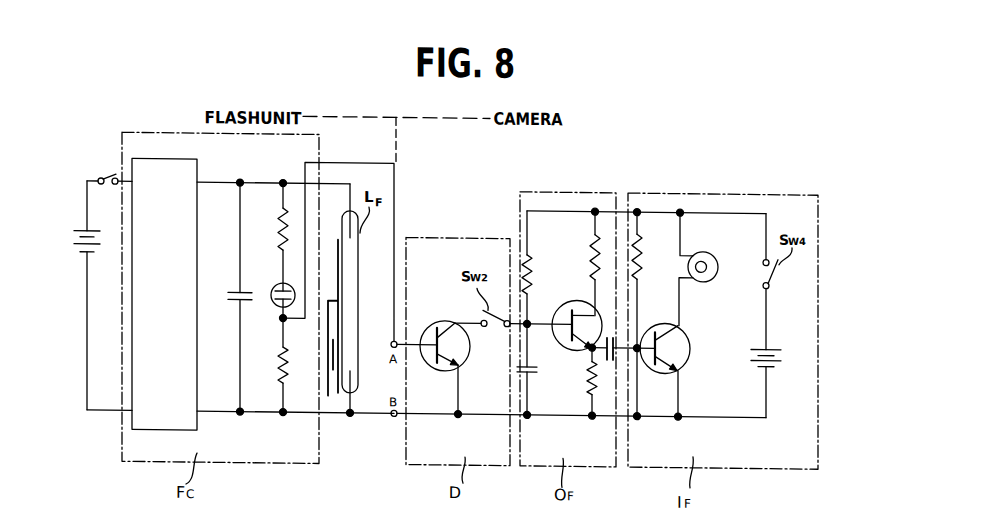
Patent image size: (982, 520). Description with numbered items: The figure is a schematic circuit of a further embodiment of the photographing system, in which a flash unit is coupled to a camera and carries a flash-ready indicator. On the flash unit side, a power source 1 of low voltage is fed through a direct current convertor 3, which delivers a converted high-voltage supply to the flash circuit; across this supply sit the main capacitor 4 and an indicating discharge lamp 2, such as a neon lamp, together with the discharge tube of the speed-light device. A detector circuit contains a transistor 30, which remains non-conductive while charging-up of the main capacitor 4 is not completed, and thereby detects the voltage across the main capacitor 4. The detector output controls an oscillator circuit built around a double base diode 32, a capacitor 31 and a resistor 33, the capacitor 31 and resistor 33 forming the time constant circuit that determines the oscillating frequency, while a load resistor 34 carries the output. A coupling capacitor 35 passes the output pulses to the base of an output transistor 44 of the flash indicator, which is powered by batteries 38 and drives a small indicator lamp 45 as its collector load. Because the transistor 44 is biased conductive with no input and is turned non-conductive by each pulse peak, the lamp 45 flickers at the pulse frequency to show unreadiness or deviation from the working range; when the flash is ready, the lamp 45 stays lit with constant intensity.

The power source of low voltage 1 is at (83, 229).
The indicating discharge lamp 2 is at (271, 296).
The direct current convertor 3 is at (156, 165).
The main capacitor 4 is at (243, 290).
The transistor 30 is at (438, 316).
The capacitor 31 is at (527, 375).
The double base diode 32 is at (567, 296).
The resistor 33 is at (527, 282).
The load resistor 34 is at (588, 374).
The coupling capacitor 35 is at (605, 358).
The batteries 38 is at (773, 360).
The output transistor 44 is at (688, 349).
The indicator lamp 45 is at (717, 256).